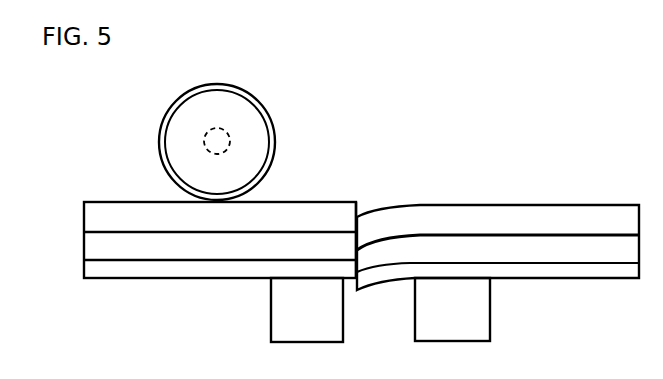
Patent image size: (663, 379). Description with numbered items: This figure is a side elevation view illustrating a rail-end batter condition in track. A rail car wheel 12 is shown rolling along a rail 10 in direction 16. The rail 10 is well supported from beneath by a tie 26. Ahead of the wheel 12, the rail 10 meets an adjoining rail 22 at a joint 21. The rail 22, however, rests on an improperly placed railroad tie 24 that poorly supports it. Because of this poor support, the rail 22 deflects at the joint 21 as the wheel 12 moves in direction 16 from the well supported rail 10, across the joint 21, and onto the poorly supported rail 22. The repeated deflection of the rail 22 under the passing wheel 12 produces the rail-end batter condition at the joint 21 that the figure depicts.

The rail 10 is at (127, 247).
The wheel 12 is at (245, 162).
The direction 16 is at (332, 100).
The joint 21 is at (361, 186).
The rail 22 is at (481, 210).
The railroad tie 24 is at (452, 328).
The tie 26 is at (300, 322).